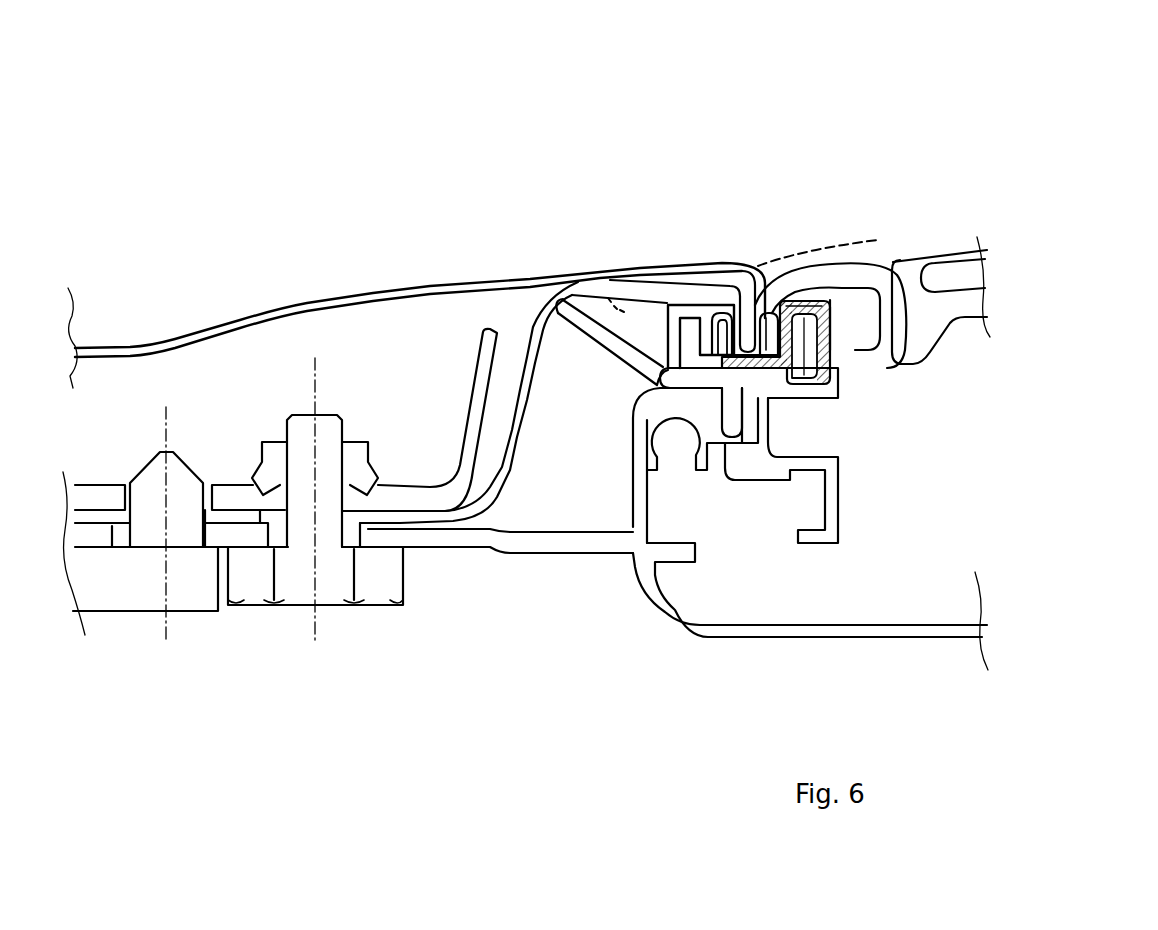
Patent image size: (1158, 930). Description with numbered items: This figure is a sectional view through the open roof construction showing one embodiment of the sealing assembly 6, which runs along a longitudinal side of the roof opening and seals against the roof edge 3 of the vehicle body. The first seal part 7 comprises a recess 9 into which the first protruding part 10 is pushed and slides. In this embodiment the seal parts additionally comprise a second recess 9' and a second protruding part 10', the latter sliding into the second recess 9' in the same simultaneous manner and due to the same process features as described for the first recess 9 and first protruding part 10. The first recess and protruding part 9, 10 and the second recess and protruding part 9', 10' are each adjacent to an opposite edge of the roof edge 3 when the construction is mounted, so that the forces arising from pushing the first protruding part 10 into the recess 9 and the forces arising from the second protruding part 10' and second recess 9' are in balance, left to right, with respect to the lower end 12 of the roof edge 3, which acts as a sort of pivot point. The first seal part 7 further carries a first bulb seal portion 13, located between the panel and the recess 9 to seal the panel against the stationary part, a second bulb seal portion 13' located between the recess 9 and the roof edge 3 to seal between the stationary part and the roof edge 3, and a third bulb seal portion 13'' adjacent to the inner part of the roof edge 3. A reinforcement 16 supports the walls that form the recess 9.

The roof edge 3 is at (877, 240).
The sealing assembly 6 is at (620, 373).
The first seal part 7 is at (706, 318).
The recess 9 is at (769, 402).
The second recess 9' is at (589, 223).
The first protruding part 10 is at (931, 392).
The second protruding part 10' is at (705, 215).
The lower end 12 is at (777, 373).
The first bulb seal portion 13 is at (875, 197).
The second bulb seal portion 13' is at (769, 195).
The third bulb seal portion 13'' is at (742, 215).
The reinforcement 16 is at (810, 312).